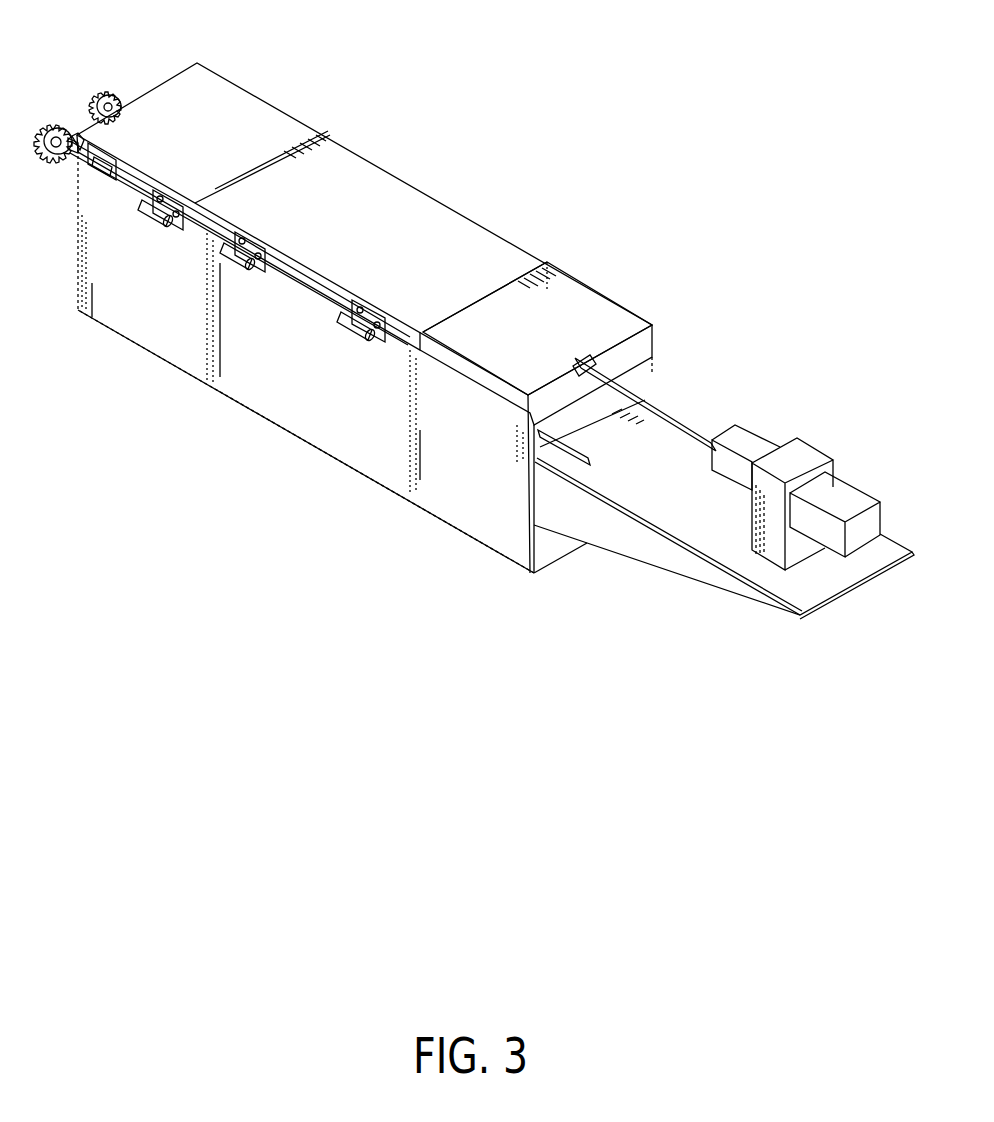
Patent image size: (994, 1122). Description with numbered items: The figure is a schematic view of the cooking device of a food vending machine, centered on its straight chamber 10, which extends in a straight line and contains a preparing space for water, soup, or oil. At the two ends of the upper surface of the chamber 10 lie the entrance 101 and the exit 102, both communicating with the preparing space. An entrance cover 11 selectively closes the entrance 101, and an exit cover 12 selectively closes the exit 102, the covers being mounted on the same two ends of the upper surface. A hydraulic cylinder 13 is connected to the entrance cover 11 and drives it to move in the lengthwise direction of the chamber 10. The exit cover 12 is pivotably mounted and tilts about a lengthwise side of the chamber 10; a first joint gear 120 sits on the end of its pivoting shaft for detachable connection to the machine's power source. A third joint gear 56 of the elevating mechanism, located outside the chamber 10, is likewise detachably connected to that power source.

The chamber 10 is at (443, 167).
The entrance cover 11 is at (583, 304).
The exit cover 12 is at (233, 92).
The hydraulic cylinder 13 is at (842, 492).
The third joint gear 56 is at (116, 90).
The entrance 101 is at (505, 282).
The exit 102 is at (280, 153).
The first joint gear 120 is at (63, 126).